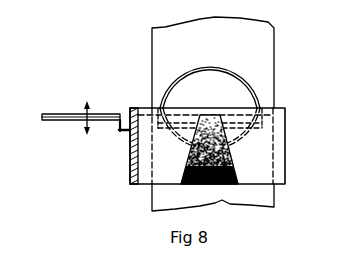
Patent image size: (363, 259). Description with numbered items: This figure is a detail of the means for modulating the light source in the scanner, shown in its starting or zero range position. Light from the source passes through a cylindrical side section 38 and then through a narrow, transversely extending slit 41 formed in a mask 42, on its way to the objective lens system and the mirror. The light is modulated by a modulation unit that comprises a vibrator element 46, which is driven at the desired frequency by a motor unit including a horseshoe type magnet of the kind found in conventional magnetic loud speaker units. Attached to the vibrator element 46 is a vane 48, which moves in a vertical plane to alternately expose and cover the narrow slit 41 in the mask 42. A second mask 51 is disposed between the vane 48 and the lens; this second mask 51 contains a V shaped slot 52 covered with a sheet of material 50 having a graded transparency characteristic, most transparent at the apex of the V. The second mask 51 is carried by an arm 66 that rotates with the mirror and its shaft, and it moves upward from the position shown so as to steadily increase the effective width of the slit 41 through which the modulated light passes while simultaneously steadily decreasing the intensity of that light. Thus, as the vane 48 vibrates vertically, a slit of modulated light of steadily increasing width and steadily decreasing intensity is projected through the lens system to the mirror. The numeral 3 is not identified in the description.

The housing body 3 is at (275, 43).
The cylindrical side section 38 is at (198, 70).
The slit 41 is at (230, 124).
The mask 42 is at (185, 90).
The vibrator element 46 is at (58, 125).
The vane 48 is at (120, 133).
The sheet of material 50 is at (226, 143).
The second mask 51 is at (285, 146).
The V shaped slot 52 is at (228, 156).
The arm 66 is at (132, 168).